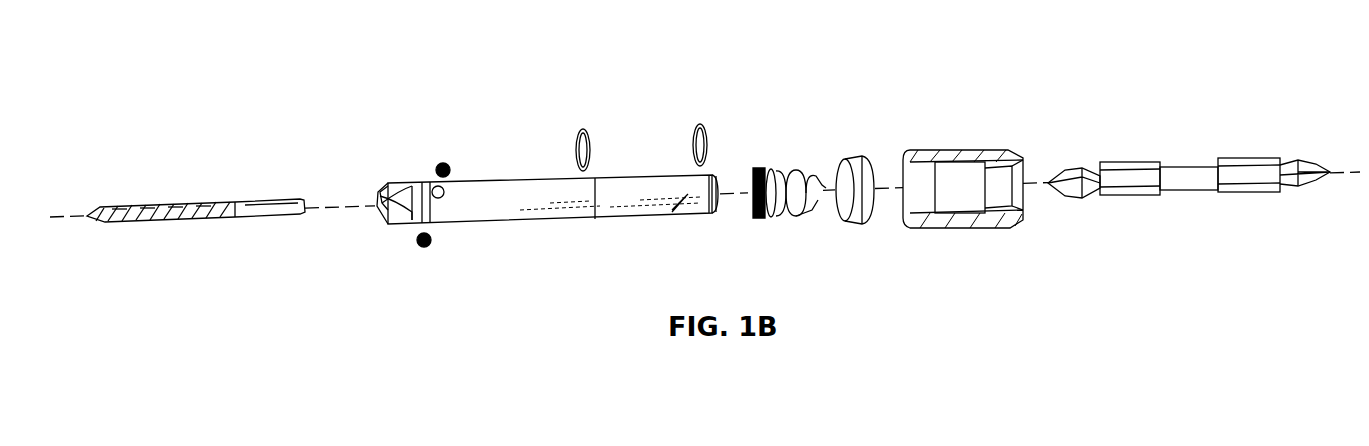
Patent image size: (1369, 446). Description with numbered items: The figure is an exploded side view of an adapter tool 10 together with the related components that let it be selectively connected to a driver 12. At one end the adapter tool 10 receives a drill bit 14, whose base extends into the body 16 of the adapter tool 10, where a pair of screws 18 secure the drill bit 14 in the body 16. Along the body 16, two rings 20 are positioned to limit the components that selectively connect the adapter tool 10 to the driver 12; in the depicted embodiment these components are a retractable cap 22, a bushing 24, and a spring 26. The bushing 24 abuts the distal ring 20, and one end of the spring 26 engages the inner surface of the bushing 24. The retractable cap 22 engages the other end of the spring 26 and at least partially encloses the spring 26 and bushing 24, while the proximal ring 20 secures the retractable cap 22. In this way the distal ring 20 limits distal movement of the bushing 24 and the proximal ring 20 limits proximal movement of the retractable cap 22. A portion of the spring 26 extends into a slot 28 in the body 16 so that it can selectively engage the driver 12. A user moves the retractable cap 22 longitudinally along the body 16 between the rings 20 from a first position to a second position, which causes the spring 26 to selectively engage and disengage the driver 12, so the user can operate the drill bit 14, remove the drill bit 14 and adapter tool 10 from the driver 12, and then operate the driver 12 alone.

The adapter tool 10 is at (500, 98).
The driver 12 is at (1176, 178).
The drill bit 14 is at (176, 219).
The body 16 is at (517, 218).
The screws 18 is at (422, 248).
The rings 20 is at (586, 128).
The retractable cap 22 is at (985, 222).
The bushing 24 is at (856, 152).
The spring 26 is at (771, 213).
The slot 28 is at (685, 195).